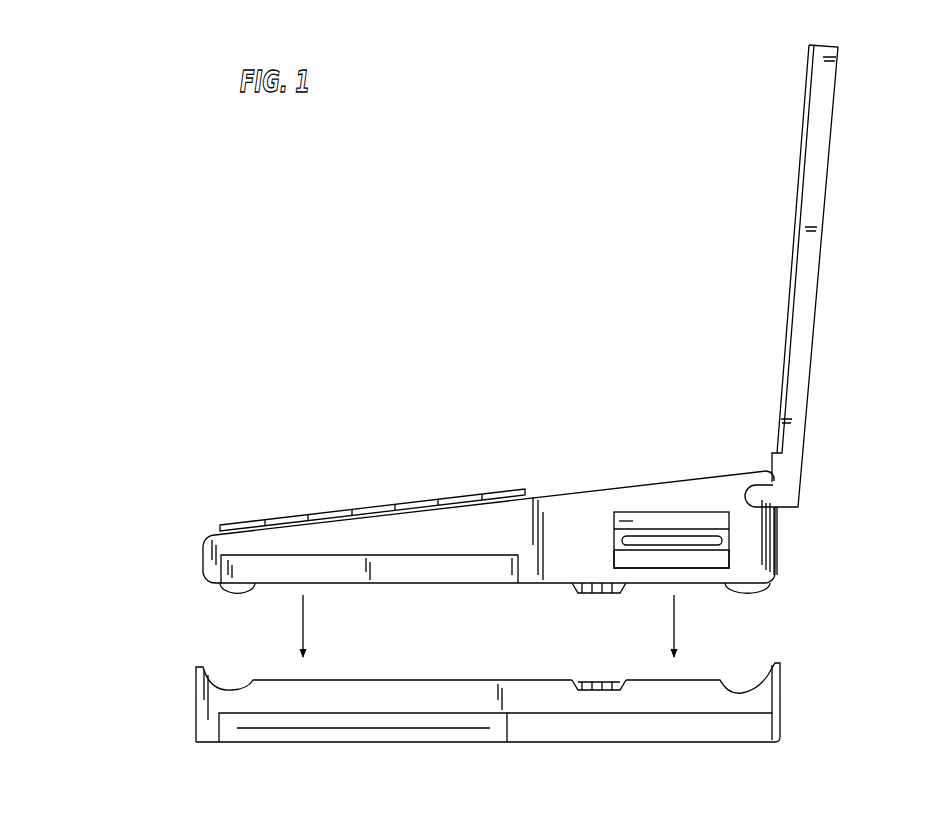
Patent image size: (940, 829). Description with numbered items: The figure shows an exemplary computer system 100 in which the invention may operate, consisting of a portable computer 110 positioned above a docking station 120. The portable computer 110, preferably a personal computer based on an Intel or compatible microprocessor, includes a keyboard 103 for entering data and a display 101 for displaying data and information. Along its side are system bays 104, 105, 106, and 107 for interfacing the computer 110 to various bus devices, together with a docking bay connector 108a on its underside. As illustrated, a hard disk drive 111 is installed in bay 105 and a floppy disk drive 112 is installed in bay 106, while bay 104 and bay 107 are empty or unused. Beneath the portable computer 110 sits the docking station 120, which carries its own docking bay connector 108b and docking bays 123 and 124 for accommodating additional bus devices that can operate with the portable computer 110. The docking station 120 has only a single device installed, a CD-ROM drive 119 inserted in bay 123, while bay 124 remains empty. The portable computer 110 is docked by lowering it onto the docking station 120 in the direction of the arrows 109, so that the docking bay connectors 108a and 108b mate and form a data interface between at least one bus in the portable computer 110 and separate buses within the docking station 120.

The computer system 100 is at (285, 237).
The display 101 is at (786, 176).
The keyboard 103 is at (325, 498).
The system bay 104 is at (611, 557).
The system bay 105 is at (612, 521).
The system bay 106 is at (612, 541).
The system bay 107 is at (393, 548).
The docking bay connector 108a is at (569, 600).
The docking bay connector 108b is at (585, 672).
The arrows 109 is at (303, 622).
The portable computer 110 is at (822, 511).
The hard disk drive 111 is at (694, 519).
The floppy disk drive 112 is at (725, 539).
The CD-ROM drive 119 is at (423, 735).
The docking station 120 is at (802, 697).
The docking bay 123 is at (298, 711).
The docking bay 124 is at (627, 743).